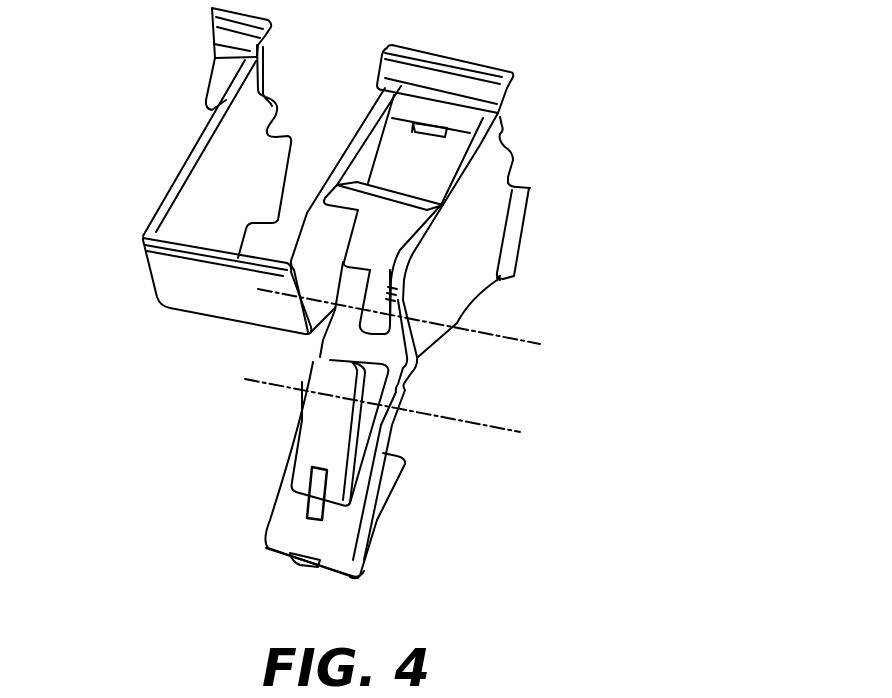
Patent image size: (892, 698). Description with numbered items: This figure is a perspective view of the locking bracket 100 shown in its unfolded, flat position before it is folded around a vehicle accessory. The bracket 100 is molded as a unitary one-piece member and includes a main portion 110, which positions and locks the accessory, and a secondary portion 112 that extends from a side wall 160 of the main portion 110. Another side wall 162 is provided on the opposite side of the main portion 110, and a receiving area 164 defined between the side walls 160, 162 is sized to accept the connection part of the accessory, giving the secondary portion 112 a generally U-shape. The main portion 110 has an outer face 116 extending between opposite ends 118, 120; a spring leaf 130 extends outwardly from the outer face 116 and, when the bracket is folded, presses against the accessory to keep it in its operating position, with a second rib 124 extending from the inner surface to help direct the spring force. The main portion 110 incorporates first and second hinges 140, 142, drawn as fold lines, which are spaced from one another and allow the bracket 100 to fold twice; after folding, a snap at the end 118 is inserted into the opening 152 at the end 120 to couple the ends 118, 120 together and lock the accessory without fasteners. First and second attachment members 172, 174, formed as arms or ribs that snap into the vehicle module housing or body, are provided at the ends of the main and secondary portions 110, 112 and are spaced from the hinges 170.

The locking bracket 100 is at (692, 94).
The main portion 110 is at (524, 160).
The secondary portion 112 is at (134, 237).
The outer face 116 is at (282, 523).
The first end 118 is at (500, 128).
The second end 120 is at (340, 580).
The second rib 124 is at (378, 518).
The spring leaf 130 is at (282, 414).
The first hinge 140 is at (473, 357).
The second hinge 142 is at (440, 480).
The opening 152 is at (307, 562).
The side wall 160 is at (367, 108).
The side wall 162 is at (195, 155).
The receiving area 164 is at (295, 182).
The hinges 170 is at (208, 32).
The first attachment member 172 is at (533, 228).
The second attachment member 174 is at (280, 122).